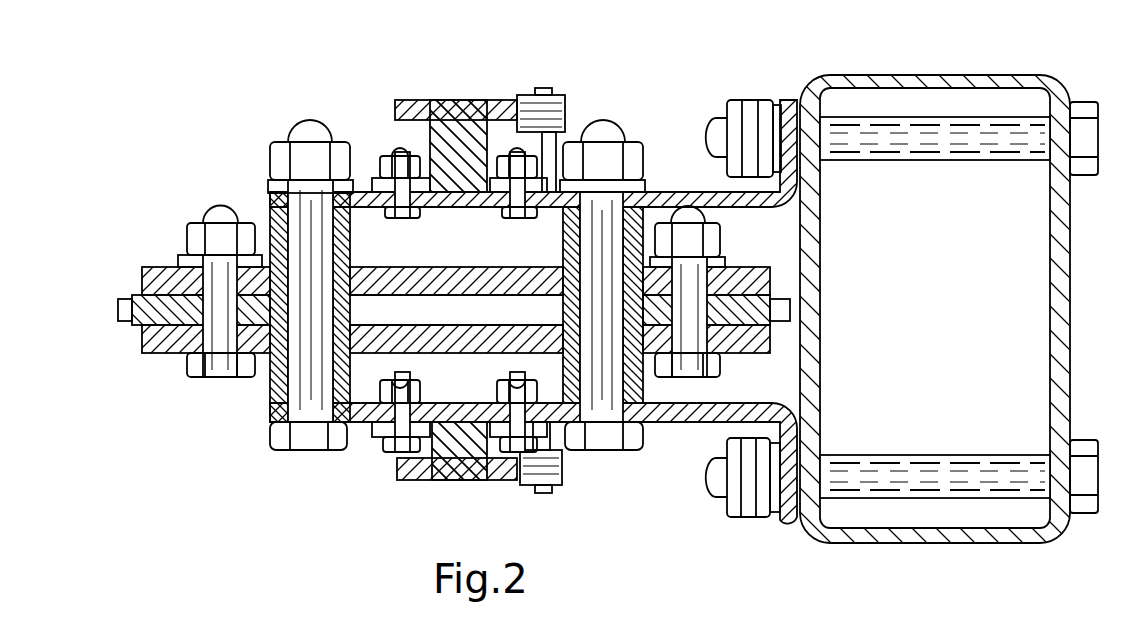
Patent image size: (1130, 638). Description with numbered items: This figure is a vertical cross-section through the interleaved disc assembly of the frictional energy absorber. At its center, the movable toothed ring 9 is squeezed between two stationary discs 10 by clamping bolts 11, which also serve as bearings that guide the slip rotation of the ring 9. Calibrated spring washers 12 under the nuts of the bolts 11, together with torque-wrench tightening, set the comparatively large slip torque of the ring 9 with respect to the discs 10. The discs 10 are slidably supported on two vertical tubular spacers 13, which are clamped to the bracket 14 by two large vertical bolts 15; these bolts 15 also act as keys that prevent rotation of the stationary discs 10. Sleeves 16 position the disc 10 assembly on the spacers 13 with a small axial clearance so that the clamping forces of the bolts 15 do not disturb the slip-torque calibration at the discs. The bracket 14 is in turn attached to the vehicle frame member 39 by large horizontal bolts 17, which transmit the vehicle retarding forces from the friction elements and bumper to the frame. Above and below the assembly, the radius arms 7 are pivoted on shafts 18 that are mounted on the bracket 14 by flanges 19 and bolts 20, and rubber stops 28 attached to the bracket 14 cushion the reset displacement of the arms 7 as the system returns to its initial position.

The radius arm 7 is at (402, 100).
The toothed ring 9 is at (118, 312).
The stationary disc 10 is at (141, 276).
The clamping bolt 11 is at (220, 210).
The calibrated spring washer 12 is at (180, 256).
The tubular spacer 13 is at (350, 300).
The bracket 14 is at (695, 193).
The bolt 15 is at (310, 135).
The sleeve 16 is at (272, 200).
The bolt 17 is at (710, 135).
The shaft 18 is at (456, 100).
The flange 19 is at (378, 184).
The bolt 20 is at (410, 216).
The rubber stop 28 is at (566, 115).
The vehicle frame member 39 is at (845, 76).